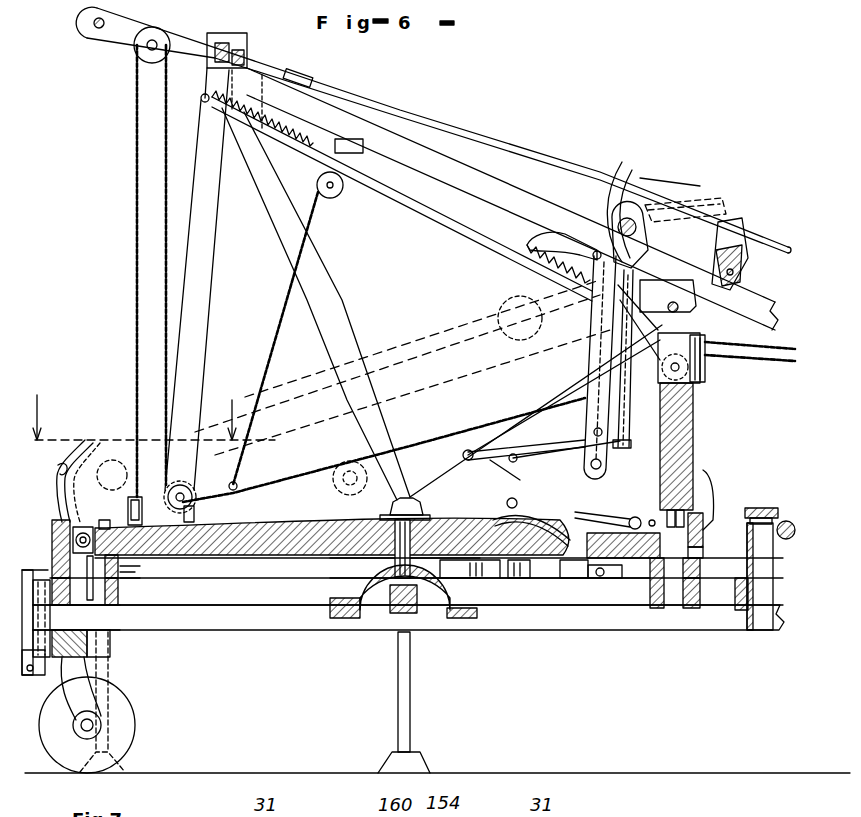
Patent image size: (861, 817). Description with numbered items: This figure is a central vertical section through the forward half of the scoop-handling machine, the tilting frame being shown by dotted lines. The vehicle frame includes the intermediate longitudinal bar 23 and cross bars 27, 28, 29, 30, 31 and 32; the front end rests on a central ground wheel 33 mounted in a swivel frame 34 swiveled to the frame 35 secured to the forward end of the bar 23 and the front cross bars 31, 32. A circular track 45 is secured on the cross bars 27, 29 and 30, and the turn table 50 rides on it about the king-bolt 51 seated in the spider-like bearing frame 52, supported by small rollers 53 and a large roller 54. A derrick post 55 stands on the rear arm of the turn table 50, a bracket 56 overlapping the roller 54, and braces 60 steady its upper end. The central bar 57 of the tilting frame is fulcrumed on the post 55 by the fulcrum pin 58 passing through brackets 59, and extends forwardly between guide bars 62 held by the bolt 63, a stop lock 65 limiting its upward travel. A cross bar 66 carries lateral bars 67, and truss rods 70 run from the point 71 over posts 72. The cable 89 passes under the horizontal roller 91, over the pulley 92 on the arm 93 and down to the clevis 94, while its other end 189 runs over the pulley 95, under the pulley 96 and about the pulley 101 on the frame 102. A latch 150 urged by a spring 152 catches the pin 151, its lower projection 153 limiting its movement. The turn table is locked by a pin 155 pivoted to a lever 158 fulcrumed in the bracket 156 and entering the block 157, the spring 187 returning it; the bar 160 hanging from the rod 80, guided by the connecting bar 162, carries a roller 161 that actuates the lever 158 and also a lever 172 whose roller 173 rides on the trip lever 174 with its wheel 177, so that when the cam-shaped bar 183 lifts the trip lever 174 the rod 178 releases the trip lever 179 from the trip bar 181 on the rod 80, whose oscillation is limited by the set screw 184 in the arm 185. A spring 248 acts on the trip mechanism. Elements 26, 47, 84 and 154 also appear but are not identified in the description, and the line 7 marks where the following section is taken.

The intermediate parallel bar 23 is at (508, 632).
The block 26 is at (738, 611).
The cross bar 27 is at (688, 611).
The cross bar 28 is at (652, 611).
The cross bar 29 is at (410, 600).
The cross bar 30 is at (121, 598).
The front cross bar 31 is at (36, 570).
The lower cross bar 32 is at (58, 657).
The ground wheel 33 is at (122, 706).
The swivel frame 34 is at (38, 672).
The frame 35 is at (46, 617).
The circular track 45 is at (122, 568).
The pulley 47 is at (150, 27).
The turn table 50 is at (290, 530).
The king-bolt 51 is at (398, 535).
The spider-like bearing frame 52 is at (345, 562).
The small rollers 53 is at (104, 520).
The large roller 54 is at (700, 525).
The derrick post 55 is at (697, 404).
The bracket 56 is at (705, 485).
The central bar 57 is at (466, 174).
The fulcrum pin 58 is at (673, 302).
The brackets 59 is at (690, 300).
The braces 60 is at (450, 468).
The guide bars 62 is at (205, 282).
The bolt 63 is at (194, 510).
The stop lock 65 is at (246, 50).
The cross bar 66 is at (736, 272).
The laterally extending bars 67 is at (776, 314).
The truss rods 70 is at (500, 146).
The point 71 is at (313, 78).
The posts 72 is at (736, 254).
The rod 80 is at (621, 201).
The pulley 84 is at (466, 450).
The cable 89 is at (276, 322).
The horizontal roller 91 is at (705, 336).
The pulley 92 is at (336, 195).
The arm 93 is at (330, 154).
The clevis 94 is at (234, 492).
The pulley 95 is at (662, 372).
The pulley 96 is at (190, 494).
The pulley 101 is at (786, 521).
The frame 102 is at (762, 508).
The latch 150 is at (88, 440).
The pin 151 is at (96, 30).
The spring 152 is at (86, 478).
The lower projection 153 is at (90, 578).
The bracket 154 is at (52, 535).
The pin 155 is at (703, 552).
The bracket 156 is at (606, 574).
The block 157 is at (648, 570).
The lever 158 is at (640, 512).
The bar 160 is at (595, 417).
The roller 161 is at (612, 468).
The connecting bar 162 is at (537, 444).
The lever 172 is at (530, 465).
The roller 173 is at (496, 468).
The trip lever 174 is at (520, 505).
The wheel 177 is at (565, 578).
The rod 178 is at (632, 392).
The trip lever 179 is at (556, 240).
The trip bar 181 is at (650, 238).
The cam-shaped bar 183 is at (492, 584).
The set screw 184 is at (660, 194).
The arm 185 is at (660, 210).
The spring 187 is at (530, 568).
The cable end 189 is at (168, 166).
The spring 248 is at (275, 131).
The section line 7 is at (152, 432).